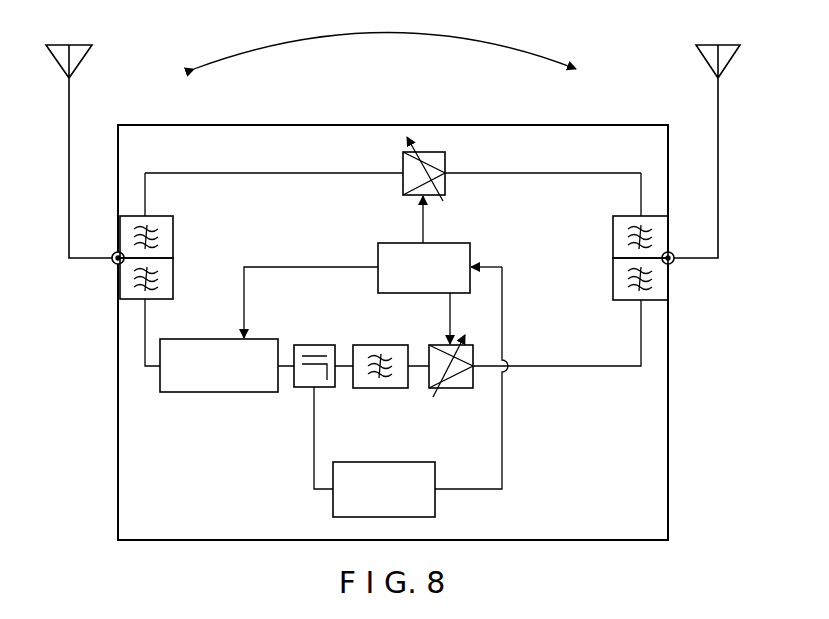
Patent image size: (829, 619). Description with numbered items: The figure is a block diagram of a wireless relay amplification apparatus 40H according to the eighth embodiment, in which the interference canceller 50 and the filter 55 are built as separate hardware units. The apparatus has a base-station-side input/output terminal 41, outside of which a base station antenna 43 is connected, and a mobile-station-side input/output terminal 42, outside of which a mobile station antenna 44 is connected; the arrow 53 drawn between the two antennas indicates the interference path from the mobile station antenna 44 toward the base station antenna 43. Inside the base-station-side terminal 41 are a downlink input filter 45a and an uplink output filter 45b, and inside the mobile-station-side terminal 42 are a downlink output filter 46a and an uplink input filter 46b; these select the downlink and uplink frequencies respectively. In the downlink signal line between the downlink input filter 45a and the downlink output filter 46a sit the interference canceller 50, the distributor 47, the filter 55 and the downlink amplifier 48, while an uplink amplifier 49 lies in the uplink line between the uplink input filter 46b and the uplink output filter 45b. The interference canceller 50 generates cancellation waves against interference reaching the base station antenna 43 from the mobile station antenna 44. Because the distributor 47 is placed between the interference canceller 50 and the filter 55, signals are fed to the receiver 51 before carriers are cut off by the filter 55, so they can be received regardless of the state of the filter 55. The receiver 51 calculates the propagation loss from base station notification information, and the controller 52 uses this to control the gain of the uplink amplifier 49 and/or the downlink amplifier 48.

The wireless relay amplification apparatus 40H is at (668, 427).
The base-station-side input/output terminal 41 is at (113, 264).
The mobile-station-side input/output terminal 42 is at (673, 264).
The base station antenna 43 is at (84, 58).
The mobile station antenna 44 is at (702, 58).
The downlink input filter 45a is at (173, 278).
The uplink output filter 45b is at (173, 234).
The downlink output filter 46a is at (628, 300).
The uplink input filter 46b is at (628, 216).
The distributor 47 is at (314, 345).
The downlink amplifier 48 is at (455, 388).
The uplink amplifier 49 is at (445, 160).
The interference canceller 50 is at (227, 392).
The receiver 51 is at (435, 509).
The controller 52 is at (384, 243).
The signal coupling between antennas 53 is at (390, 33).
The filter 55 is at (381, 388).